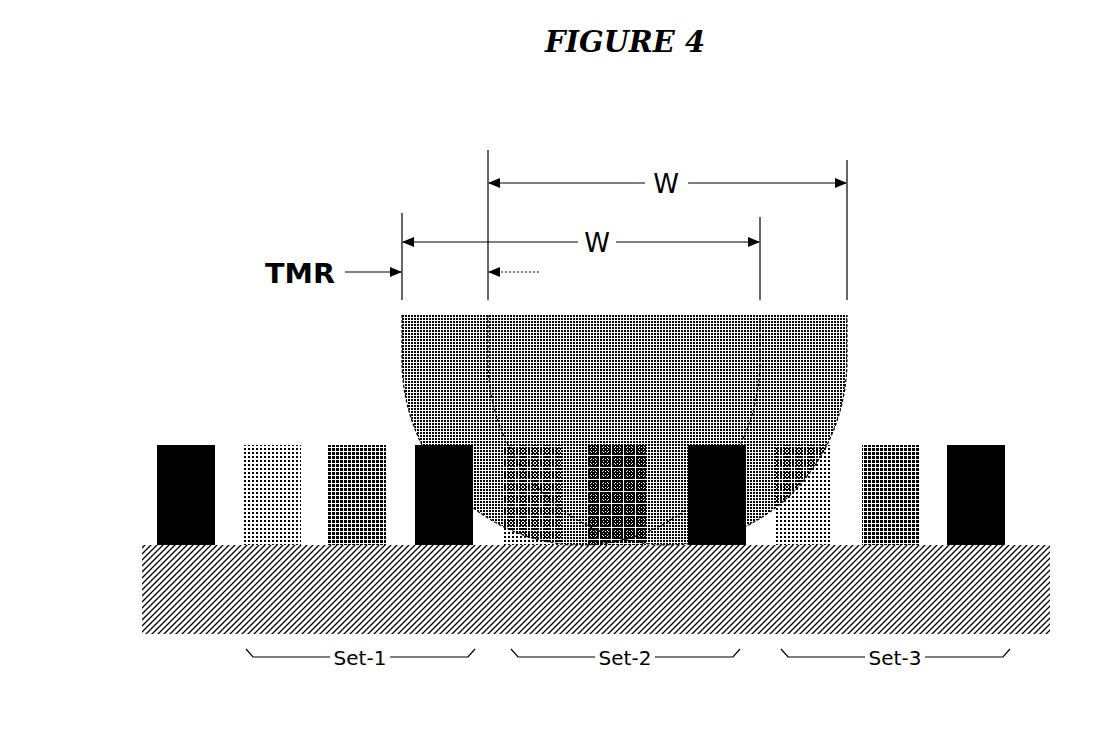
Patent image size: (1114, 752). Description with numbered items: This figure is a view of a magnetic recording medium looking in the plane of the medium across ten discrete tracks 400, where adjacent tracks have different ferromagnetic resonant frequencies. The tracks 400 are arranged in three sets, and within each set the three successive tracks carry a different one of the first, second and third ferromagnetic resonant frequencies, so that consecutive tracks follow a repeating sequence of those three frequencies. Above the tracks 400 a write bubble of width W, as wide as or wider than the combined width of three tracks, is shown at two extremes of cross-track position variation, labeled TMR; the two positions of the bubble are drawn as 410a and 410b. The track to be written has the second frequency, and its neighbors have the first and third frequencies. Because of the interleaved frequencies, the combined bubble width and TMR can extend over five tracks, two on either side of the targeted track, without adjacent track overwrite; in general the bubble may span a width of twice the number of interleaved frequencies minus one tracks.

The tracks 400 is at (1020, 495).
The first interrogation region position 410a is at (848, 360).
The second interrogation region position 410b is at (402, 365).